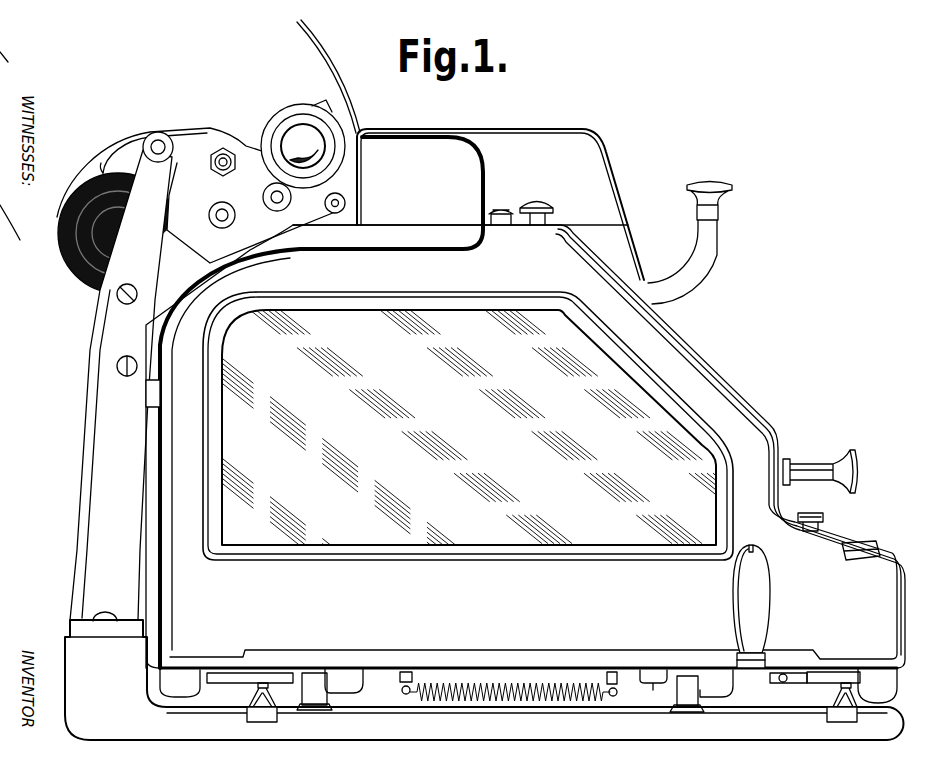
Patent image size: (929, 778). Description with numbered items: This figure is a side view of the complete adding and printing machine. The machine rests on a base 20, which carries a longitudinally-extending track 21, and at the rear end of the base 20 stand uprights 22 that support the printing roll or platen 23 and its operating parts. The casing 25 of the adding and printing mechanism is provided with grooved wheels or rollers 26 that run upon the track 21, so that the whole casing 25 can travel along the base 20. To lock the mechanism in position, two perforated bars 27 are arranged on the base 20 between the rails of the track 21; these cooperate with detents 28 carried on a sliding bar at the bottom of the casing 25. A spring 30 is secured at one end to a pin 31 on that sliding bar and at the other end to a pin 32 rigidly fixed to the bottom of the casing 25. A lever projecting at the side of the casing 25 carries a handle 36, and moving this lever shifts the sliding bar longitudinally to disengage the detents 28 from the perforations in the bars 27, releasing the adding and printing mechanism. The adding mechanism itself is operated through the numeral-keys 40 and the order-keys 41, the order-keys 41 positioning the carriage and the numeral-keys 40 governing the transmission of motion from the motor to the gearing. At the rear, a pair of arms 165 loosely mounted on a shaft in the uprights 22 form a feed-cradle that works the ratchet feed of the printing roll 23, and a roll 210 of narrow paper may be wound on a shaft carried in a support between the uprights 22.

The base 20 is at (630, 720).
The track 21 is at (263, 722).
The uprights 22 is at (105, 462).
The printing roll 23 is at (300, 104).
The casing 25 is at (537, 453).
The grooved wheels 26 is at (250, 694).
The perforated bars 27 is at (314, 708).
The detents 28 is at (352, 692).
The spring 30 is at (506, 702).
The pin 31 is at (622, 678).
The pin 32 is at (400, 690).
The handle 36 is at (766, 592).
The numeral-keys 40 is at (862, 543).
The order-keys 41 is at (812, 514).
The arms 165 is at (88, 310).
The roll of narrow paper 210 is at (80, 270).